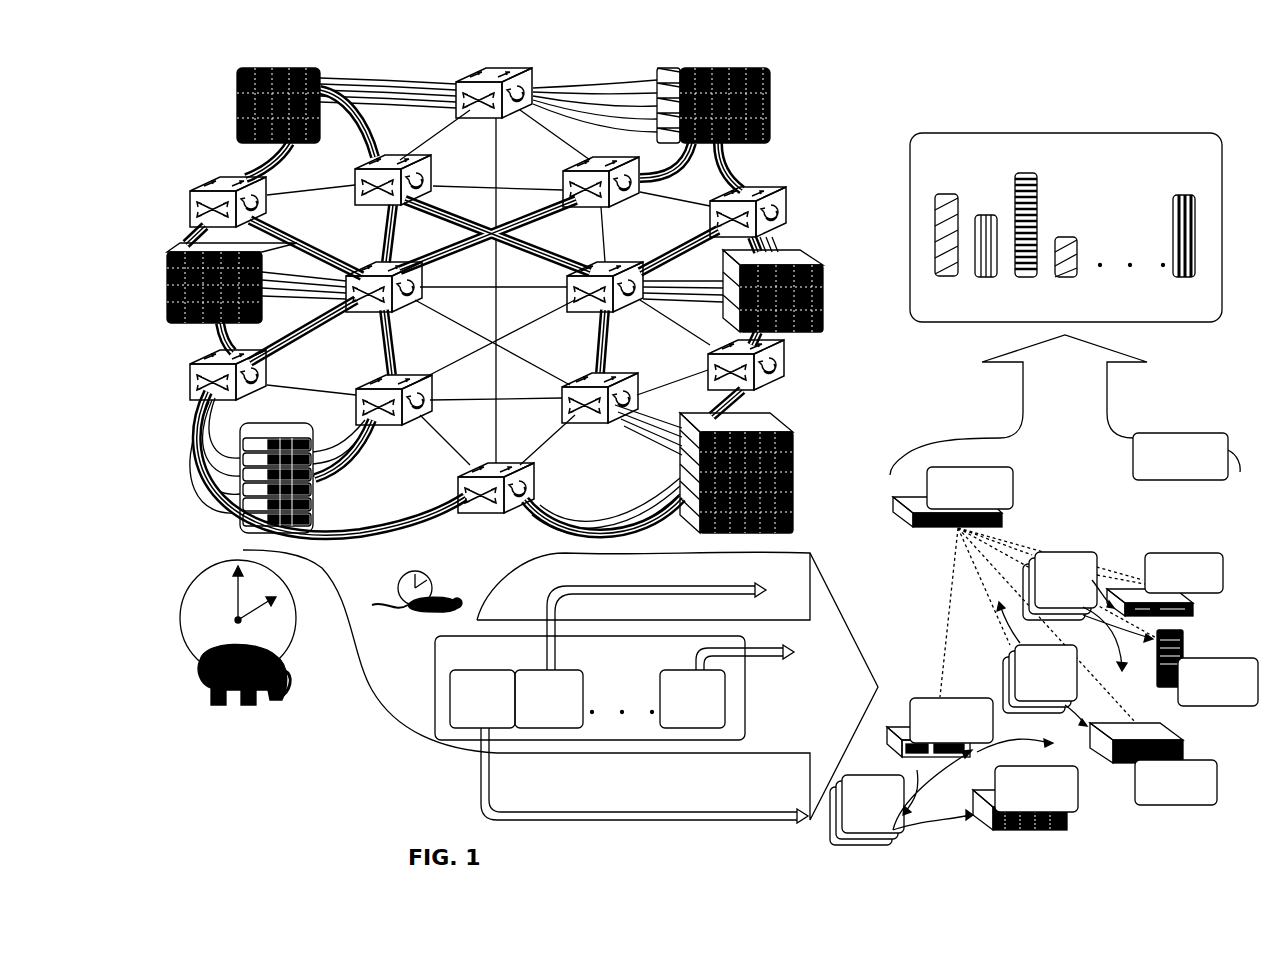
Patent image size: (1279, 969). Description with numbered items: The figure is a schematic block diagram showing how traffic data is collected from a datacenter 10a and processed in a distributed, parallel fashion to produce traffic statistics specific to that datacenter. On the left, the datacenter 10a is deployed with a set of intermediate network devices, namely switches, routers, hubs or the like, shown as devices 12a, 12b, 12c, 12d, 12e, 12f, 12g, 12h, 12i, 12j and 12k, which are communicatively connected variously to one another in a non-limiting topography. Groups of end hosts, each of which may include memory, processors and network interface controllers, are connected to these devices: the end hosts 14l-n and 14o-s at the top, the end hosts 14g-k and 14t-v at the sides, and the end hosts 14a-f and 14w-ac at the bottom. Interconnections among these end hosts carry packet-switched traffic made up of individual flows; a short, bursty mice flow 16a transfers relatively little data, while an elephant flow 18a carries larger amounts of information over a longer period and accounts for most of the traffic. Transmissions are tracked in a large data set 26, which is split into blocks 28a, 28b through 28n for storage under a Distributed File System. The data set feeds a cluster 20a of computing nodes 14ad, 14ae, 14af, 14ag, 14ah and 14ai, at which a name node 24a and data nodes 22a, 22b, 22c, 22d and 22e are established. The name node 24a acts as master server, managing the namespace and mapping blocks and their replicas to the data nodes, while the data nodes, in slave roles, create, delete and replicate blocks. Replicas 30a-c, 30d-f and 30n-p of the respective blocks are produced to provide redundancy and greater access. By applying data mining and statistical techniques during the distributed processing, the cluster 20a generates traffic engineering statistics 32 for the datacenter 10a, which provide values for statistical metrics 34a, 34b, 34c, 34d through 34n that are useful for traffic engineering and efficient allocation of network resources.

The datacenter 10a is at (220, 88).
The intermediate network device 12a is at (490, 514).
The intermediate network device 12b is at (392, 425).
The intermediate network device 12c is at (258, 398).
The intermediate network device 12d is at (372, 313).
The intermediate network device 12e is at (220, 178).
The intermediate network device 12f is at (374, 206).
The intermediate network device 12g is at (482, 120).
The intermediate network device 12h is at (585, 208).
The intermediate network device 12i is at (811, 215).
The intermediate network device 12j is at (618, 313).
The intermediate network device 12k is at (772, 386).
The end hosts 14l-n is at (305, 143).
The end hosts 14o-s is at (760, 143).
The end hosts 14g-k is at (250, 323).
The end hosts 14t-v is at (805, 332).
The end hosts 14a-f is at (310, 533).
The end hosts 14w-ac is at (690, 533).
The computing node 14ad is at (905, 527).
The computing node 14ae is at (1193, 608).
The computing node 14af is at (1183, 650).
The computing node 14ag is at (1183, 725).
The computing node 14ah is at (1067, 827).
The computing node 14ai is at (887, 745).
The mice flow 16a is at (411, 548).
The elephant flow 18a is at (237, 563).
The cluster 20a is at (1117, 494).
The data node 22a is at (1165, 584).
The data node 22b is at (1218, 682).
The data node 22c is at (1153, 764).
The data node 22d is at (1025, 798).
The data node 22e is at (940, 727).
The name node 24a is at (953, 497).
The data set 26 is at (590, 688).
The block 28a is at (482, 699).
The block 28b is at (549, 699).
The block 28n is at (692, 699).
The replicas 30a-c is at (867, 810).
The replicas 30d-f is at (1060, 586).
The replicas 30n-p is at (1040, 679).
The traffic statistics 32 is at (1066, 227).
The statistical metric 34a is at (957, 178).
The statistical metric 34b is at (989, 210).
The statistical metric 34c is at (1028, 168).
The statistical metric 34d is at (1069, 231).
The statistical metric 34n is at (1187, 189).